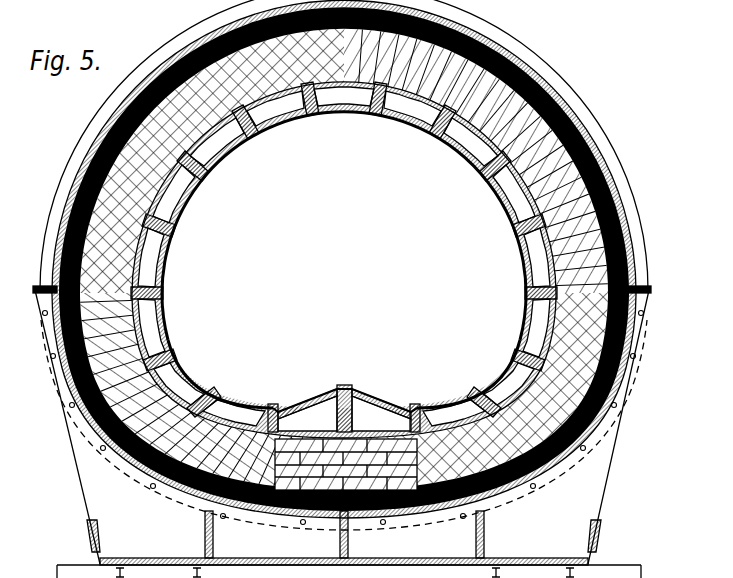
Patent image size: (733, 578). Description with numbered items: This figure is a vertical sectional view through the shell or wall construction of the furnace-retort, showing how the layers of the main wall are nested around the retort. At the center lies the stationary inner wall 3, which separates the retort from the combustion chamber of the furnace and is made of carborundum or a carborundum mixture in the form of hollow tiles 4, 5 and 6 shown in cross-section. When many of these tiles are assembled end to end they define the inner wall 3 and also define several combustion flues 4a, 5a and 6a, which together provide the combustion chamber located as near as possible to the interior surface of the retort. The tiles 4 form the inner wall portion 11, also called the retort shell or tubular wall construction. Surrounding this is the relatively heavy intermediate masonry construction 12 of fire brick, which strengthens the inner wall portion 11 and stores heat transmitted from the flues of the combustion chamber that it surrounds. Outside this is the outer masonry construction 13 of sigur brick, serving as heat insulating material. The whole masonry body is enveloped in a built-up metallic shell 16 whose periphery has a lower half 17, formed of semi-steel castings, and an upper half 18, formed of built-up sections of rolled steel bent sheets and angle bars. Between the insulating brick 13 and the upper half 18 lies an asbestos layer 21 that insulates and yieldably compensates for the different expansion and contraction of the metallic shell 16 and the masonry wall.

The stationary inner wall 3 is at (520, 247).
The hollow tile 4 is at (167, 247).
The combustion flue 4a is at (278, 112).
The hollow tile 5 is at (308, 400).
The combustion flue 5a is at (321, 412).
The hollow tile 6 is at (383, 401).
The combustion flue 6a is at (366, 404).
The inner wall portion 11 is at (463, 133).
The intermediate masonry construction 12 is at (565, 200).
The outer masonry construction 13 is at (563, 110).
The built-up metallic shell 16 is at (646, 262).
The lower half of the metallic shell 17 is at (343, 432).
The upper half of the metallic shell 18 is at (611, 136).
The asbestos layer 21 is at (488, 52).